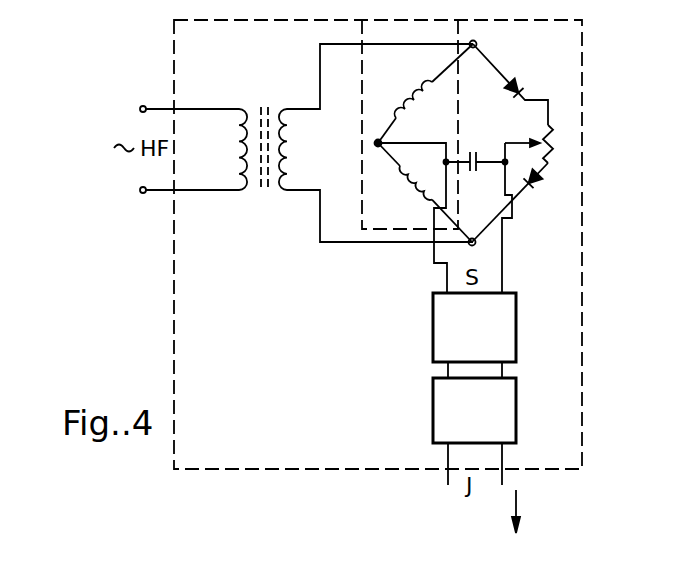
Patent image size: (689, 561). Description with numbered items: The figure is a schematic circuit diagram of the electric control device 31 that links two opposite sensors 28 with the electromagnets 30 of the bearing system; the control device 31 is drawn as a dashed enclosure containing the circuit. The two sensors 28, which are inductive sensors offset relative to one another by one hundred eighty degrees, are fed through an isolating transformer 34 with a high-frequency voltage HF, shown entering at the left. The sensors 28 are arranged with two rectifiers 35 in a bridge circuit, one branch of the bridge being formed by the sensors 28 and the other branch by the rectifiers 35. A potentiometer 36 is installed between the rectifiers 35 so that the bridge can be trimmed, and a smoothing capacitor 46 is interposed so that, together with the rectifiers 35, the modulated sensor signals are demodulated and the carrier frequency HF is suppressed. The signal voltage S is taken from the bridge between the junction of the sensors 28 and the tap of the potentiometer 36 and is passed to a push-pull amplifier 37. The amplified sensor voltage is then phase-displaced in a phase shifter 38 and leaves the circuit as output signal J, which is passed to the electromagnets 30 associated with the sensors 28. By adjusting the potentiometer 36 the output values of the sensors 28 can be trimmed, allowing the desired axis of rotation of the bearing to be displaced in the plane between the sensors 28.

The sensors 28 is at (426, 84).
The electromagnets 30 is at (531, 511).
The electric control device 31 is at (582, 330).
The isolating transformer 34 is at (246, 193).
The rectifiers 35 is at (519, 84).
The potentiometer 36 is at (556, 146).
The push-pull amplifier 37 is at (505, 346).
The phase shifter 38 is at (505, 416).
The smoothing capacitor 46 is at (478, 157).